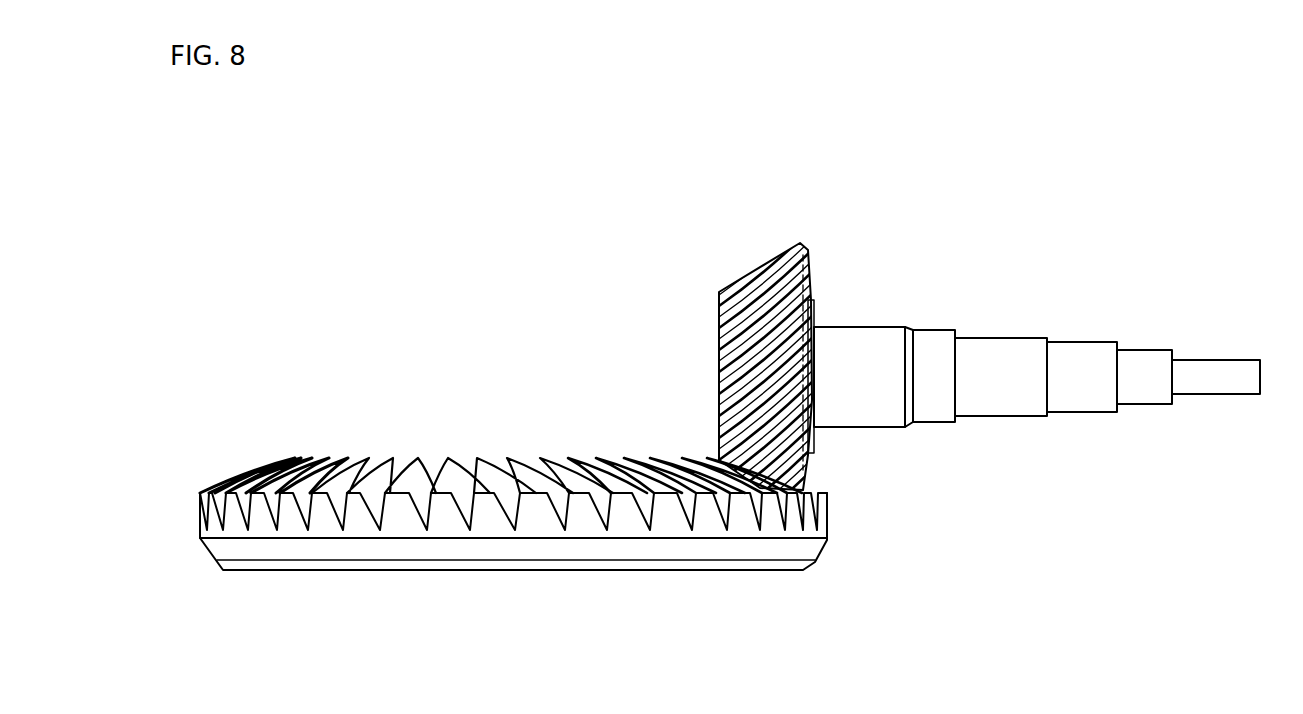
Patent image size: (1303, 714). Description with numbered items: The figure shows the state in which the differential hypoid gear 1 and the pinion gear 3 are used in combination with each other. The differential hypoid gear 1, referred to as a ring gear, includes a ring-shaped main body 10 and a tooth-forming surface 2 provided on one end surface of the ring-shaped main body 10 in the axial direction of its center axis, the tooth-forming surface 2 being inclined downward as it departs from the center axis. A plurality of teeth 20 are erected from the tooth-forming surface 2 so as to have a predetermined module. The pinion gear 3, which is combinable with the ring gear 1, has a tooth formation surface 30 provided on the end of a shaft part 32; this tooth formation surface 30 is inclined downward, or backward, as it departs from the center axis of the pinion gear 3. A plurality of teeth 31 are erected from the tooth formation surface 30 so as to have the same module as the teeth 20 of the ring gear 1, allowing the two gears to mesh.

The differential hypoid gear 1 is at (260, 425).
The tooth-forming surface 2 is at (222, 472).
The ring-shaped main body 10 is at (698, 547).
The teeth 20 is at (373, 487).
The pinion gear 3 is at (983, 225).
The tooth formation surface 30 is at (738, 278).
The teeth 31 is at (776, 287).
The shaft part 32 is at (990, 389).